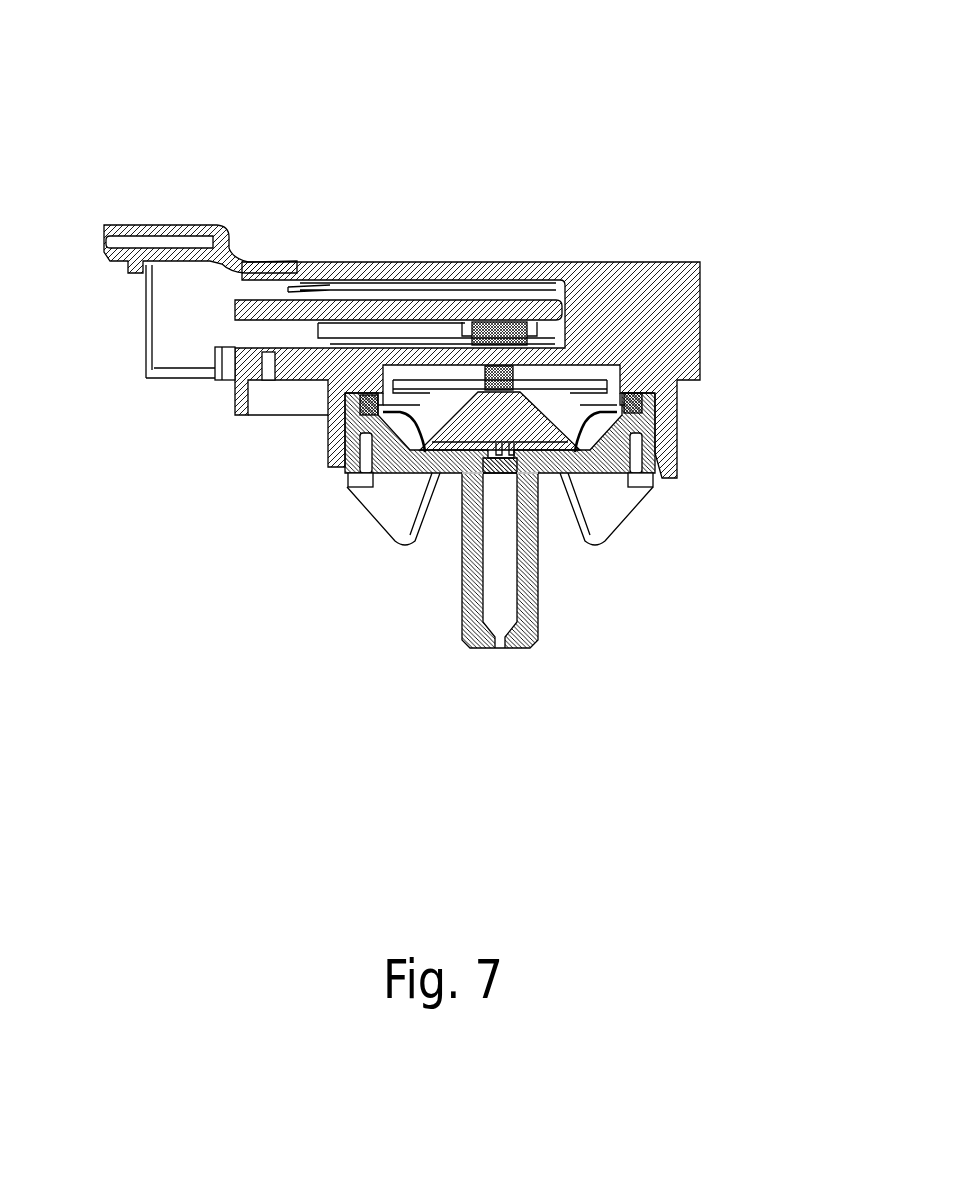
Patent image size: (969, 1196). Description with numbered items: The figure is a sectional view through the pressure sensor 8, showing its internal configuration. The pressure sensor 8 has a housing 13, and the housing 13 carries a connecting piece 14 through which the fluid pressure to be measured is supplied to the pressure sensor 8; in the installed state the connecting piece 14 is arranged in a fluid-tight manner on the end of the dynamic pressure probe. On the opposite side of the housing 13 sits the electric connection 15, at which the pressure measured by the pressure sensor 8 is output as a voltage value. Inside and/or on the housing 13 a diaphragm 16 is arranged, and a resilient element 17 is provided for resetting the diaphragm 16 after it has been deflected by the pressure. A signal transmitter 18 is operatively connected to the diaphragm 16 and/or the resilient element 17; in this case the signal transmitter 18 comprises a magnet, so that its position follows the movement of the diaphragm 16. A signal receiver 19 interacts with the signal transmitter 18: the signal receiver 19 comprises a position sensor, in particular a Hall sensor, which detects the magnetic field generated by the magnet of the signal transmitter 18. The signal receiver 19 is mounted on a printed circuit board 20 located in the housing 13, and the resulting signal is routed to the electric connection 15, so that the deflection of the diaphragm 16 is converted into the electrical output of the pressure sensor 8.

The pressure sensor 8 is at (472, 124).
The housing 13 is at (617, 252).
The connecting piece 14 is at (500, 595).
The electric connection 15 is at (180, 312).
The diaphragm 16 is at (463, 420).
The resilient element 17 is at (628, 392).
The signal transmitter 18 is at (497, 380).
The signal receiver 19 is at (477, 330).
The printed circuit board 20 is at (265, 305).